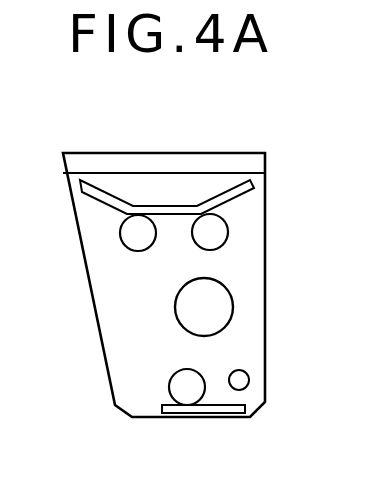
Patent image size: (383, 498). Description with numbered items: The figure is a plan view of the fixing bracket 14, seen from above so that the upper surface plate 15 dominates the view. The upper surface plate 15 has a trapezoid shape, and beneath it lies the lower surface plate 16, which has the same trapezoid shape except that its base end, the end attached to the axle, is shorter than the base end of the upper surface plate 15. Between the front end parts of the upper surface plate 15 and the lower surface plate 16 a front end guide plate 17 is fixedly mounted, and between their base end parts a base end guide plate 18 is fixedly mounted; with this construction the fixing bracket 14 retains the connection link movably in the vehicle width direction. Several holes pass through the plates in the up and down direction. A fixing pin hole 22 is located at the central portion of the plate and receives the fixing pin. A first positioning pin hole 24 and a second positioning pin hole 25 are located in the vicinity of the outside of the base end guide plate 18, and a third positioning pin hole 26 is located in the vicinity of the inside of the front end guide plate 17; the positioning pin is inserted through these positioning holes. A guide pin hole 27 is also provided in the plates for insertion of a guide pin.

The fixing bracket 14 is at (375, 106).
The upper surface plate 15 is at (243, 272).
The lower surface plate 16 is at (131, 172).
The front end guide plate 17 is at (213, 415).
The base end guide plate 18 is at (187, 205).
The fixing pin hole 22 is at (225, 298).
The first positioning pin hole 24 is at (147, 249).
The second positioning pin hole 25 is at (203, 246).
The third positioning pin hole 26 is at (195, 404).
The guide pin hole 27 is at (236, 389).